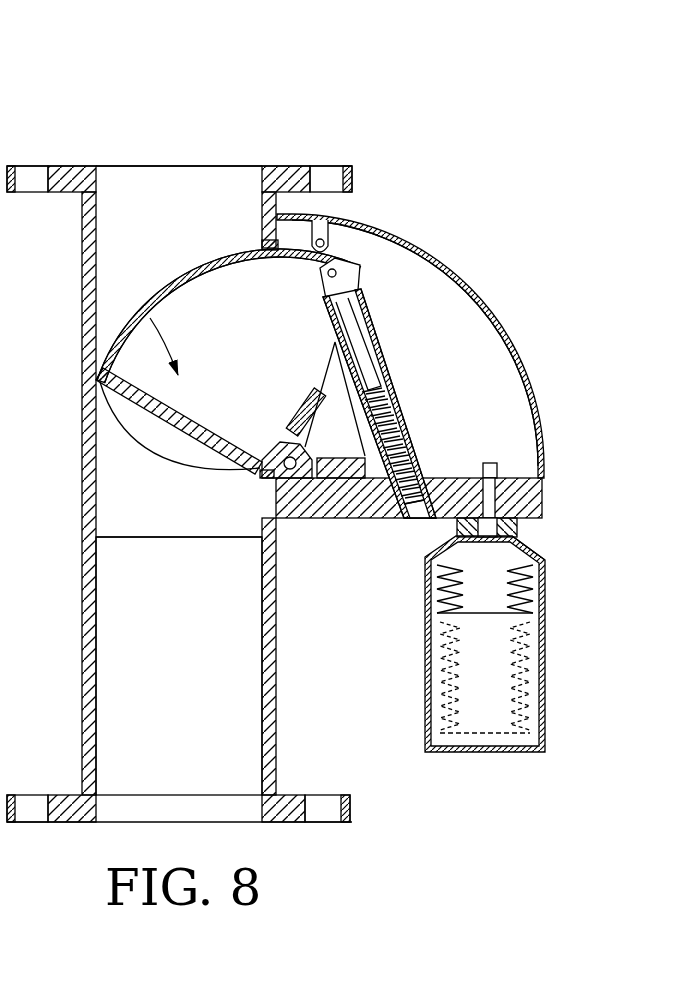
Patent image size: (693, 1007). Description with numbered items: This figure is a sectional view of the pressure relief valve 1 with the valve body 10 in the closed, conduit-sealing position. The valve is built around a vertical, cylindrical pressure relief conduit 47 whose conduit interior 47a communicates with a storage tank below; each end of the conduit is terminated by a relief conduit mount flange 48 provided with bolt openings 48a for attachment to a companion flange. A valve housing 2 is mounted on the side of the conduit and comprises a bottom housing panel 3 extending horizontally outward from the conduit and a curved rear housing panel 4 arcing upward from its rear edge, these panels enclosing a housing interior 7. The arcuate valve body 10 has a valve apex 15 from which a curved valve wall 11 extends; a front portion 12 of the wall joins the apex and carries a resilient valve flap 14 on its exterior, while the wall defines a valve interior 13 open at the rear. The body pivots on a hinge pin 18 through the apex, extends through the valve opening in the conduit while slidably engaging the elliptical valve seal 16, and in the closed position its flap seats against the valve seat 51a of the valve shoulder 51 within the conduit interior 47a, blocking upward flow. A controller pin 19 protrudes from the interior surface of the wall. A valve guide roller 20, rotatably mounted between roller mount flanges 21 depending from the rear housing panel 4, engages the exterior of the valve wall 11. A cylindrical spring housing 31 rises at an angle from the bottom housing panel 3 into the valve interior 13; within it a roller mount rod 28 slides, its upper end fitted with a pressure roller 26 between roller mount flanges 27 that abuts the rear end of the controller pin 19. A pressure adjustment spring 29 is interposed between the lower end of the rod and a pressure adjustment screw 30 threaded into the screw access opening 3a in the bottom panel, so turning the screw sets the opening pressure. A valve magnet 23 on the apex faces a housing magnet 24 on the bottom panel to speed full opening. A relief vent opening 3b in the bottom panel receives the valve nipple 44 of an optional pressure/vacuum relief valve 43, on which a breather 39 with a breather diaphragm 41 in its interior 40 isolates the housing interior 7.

The pressure relief valve 1 is at (103, 97).
The valve housing 2 is at (482, 288).
The bottom housing panel 3 is at (340, 522).
The screw access opening 3a is at (410, 520).
The relief vent opening 3b is at (495, 472).
The rear housing panel 4 is at (440, 247).
The housing interior 7 is at (490, 356).
The valve body 10 is at (172, 290).
The valve wall 11 is at (200, 257).
The front portion of the valve wall 12 is at (150, 418).
The valve interior 13 is at (152, 318).
The valve flap 14 is at (118, 400).
The valve apex 15 is at (286, 445).
The valve seal 16 is at (262, 247).
The hinge pin 18 is at (262, 508).
The controller pin 19 is at (175, 285).
The valve guide roller 20 is at (335, 240).
The roller mount flanges 21 is at (330, 240).
The valve magnet 23 is at (300, 420).
The housing magnet 24 is at (358, 460).
The pressure roller 26 is at (328, 276).
The roller mount flanges 27 is at (352, 282).
The roller mount rod 28 is at (382, 348).
The pressure adjustment spring 29 is at (400, 395).
The pressure adjustment screw 30 is at (418, 462).
The spring housing 31 is at (330, 318).
The breather 39 is at (548, 610).
The breather interior 40 is at (535, 636).
The breather diaphragm 41 is at (533, 544).
The pressure/vacuum relief valve 43 is at (520, 528).
The valve nipple 44 is at (495, 498).
The pressure relief conduit 47 is at (82, 248).
The conduit interior 47a is at (228, 178).
The relief conduit mount flange 48 is at (80, 168).
The bolt openings 48a is at (28, 168).
The valve shoulder 51 is at (203, 538).
The valve seat 51a is at (155, 455).